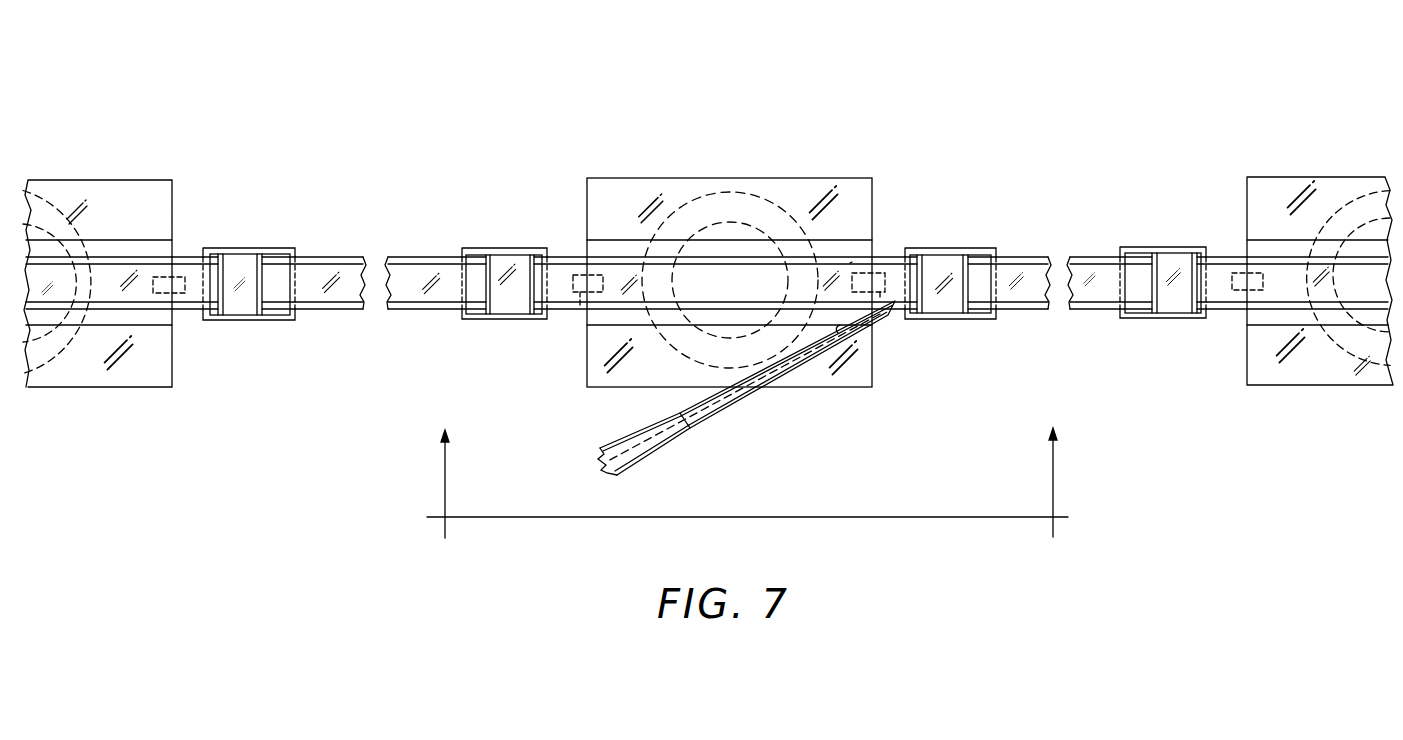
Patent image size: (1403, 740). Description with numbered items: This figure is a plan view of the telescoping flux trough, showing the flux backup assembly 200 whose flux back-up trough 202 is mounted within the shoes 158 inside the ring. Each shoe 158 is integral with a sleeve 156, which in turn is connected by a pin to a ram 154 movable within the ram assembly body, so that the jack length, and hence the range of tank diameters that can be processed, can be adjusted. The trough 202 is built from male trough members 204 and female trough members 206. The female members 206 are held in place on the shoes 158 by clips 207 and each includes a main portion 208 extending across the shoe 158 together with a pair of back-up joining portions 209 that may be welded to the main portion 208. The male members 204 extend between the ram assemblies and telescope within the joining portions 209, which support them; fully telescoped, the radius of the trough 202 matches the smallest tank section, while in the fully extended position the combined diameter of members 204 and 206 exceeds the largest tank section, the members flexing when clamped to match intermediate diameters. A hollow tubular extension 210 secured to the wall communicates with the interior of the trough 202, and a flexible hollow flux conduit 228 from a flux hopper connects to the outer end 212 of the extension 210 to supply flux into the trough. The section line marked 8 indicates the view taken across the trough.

The ram 154 is at (763, 200).
The sleeve 156 is at (767, 233).
The shoe 158 is at (155, 190).
The flux backup assembly 200 is at (945, 138).
The flux back-up trough 202 is at (363, 365).
The male trough members 204 is at (328, 257).
The female trough members 206 is at (560, 240).
The clips 207 is at (577, 305).
The main portion 208 is at (850, 263).
The back-up joining portions 209 is at (498, 248).
The hollow tubular extension 210 is at (780, 377).
The outer end 212 is at (723, 407).
The flexible hollow flux conduit 228 is at (605, 445).
The section line 8- 8 is at (746, 487).